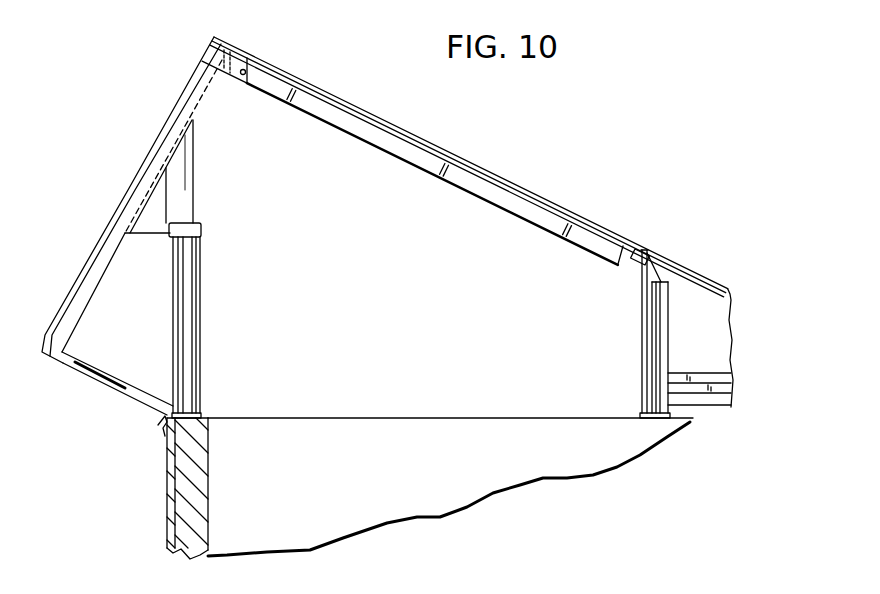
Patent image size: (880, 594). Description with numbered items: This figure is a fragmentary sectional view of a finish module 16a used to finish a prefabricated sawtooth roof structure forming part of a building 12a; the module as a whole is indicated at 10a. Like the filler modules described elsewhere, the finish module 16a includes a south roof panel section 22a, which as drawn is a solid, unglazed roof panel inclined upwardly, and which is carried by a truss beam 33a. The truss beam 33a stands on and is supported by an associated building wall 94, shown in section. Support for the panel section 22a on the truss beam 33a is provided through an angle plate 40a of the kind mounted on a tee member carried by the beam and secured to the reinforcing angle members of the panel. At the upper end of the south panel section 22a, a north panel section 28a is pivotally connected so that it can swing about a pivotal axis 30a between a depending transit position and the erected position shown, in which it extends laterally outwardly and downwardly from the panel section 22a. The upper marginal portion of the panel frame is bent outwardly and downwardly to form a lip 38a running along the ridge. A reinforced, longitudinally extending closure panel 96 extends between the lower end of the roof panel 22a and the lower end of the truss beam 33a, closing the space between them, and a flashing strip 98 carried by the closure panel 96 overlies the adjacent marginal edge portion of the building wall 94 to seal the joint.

The building structure 10a is at (556, 155).
The building 12a is at (167, 524).
The finish module 16a is at (311, 64).
The south panel section 22a is at (102, 201).
The north panel section 28a is at (426, 124).
The pivotal axis 30a is at (243, 69).
The truss beam 33a is at (198, 325).
The lip 38a is at (450, 505).
The angle plate 40a is at (186, 171).
The building wall 94 is at (187, 474).
The closure panel 96 is at (93, 381).
The flashing strip 98 is at (158, 425).